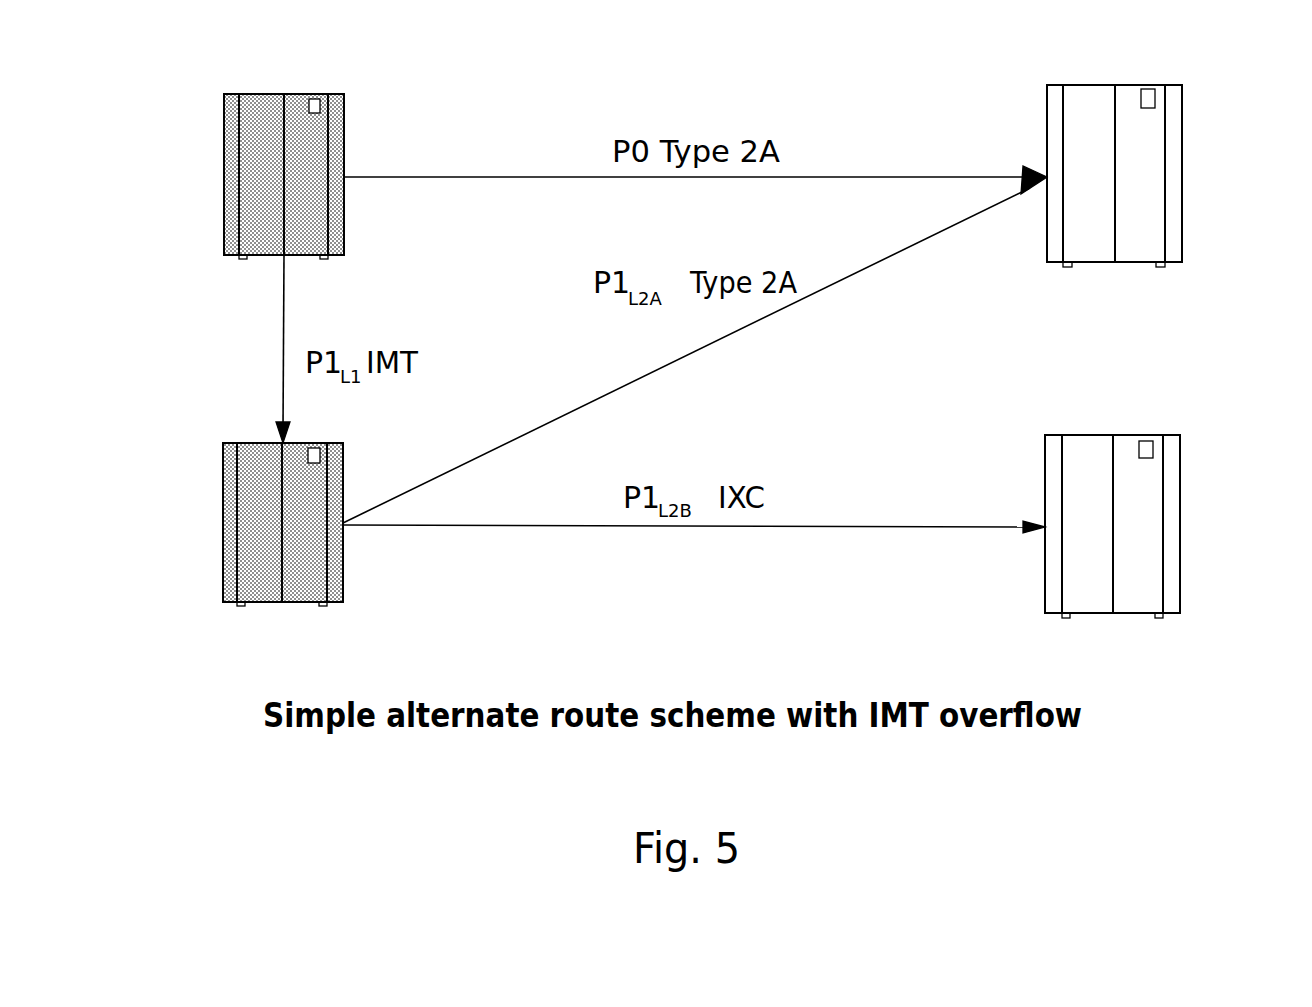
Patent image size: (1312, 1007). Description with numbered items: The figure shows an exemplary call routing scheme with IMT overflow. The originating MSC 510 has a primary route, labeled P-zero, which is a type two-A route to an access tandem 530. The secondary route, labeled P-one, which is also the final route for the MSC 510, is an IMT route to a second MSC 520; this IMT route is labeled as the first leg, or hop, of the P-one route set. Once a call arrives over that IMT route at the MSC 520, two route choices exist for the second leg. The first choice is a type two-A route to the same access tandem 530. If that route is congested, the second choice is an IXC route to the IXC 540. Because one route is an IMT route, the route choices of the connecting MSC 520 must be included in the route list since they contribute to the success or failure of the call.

The MSC 510 is at (222, 176).
The MSC 520 is at (222, 532).
The access tandem 530 is at (1184, 176).
The IXC 540 is at (1182, 511).